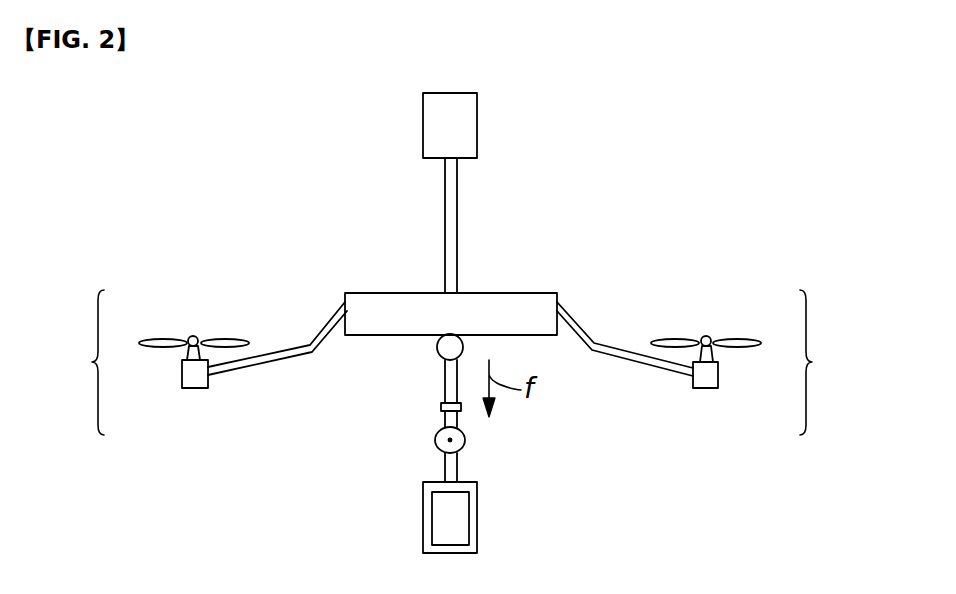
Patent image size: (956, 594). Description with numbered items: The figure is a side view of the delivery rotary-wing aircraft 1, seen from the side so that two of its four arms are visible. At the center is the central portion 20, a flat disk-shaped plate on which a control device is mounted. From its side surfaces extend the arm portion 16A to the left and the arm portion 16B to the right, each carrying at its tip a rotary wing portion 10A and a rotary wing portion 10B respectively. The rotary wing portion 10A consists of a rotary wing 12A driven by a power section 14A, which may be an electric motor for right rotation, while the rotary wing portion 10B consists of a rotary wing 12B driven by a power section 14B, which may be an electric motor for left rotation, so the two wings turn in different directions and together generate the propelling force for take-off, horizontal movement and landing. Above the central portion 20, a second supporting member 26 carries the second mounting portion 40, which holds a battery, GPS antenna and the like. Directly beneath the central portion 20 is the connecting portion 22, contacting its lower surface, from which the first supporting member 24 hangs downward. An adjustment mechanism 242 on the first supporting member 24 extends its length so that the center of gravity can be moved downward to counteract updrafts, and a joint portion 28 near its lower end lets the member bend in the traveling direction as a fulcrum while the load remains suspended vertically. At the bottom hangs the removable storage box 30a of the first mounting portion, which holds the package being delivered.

The delivery rotary-wing aircraft 1 is at (597, 156).
The second mounting portion 40 is at (423, 130).
The second supporting member 26 is at (445, 201).
The central portion 20 is at (430, 297).
The connecting portion 22 is at (434, 354).
The first supporting member 24 is at (443, 418).
The adjustment mechanism 242 is at (441, 408).
The joint portion 28 is at (462, 446).
The storage box 30a is at (423, 518).
The rotary wing portion 10A is at (184, 362).
The rotary wing 12A is at (168, 341).
The power section 14A is at (182, 375).
The arm portion 16A is at (276, 356).
The rotary wing portion 10B is at (719, 362).
The rotary wing 12B is at (760, 322).
The power section 14B is at (718, 375).
The arm portion 16B is at (622, 362).